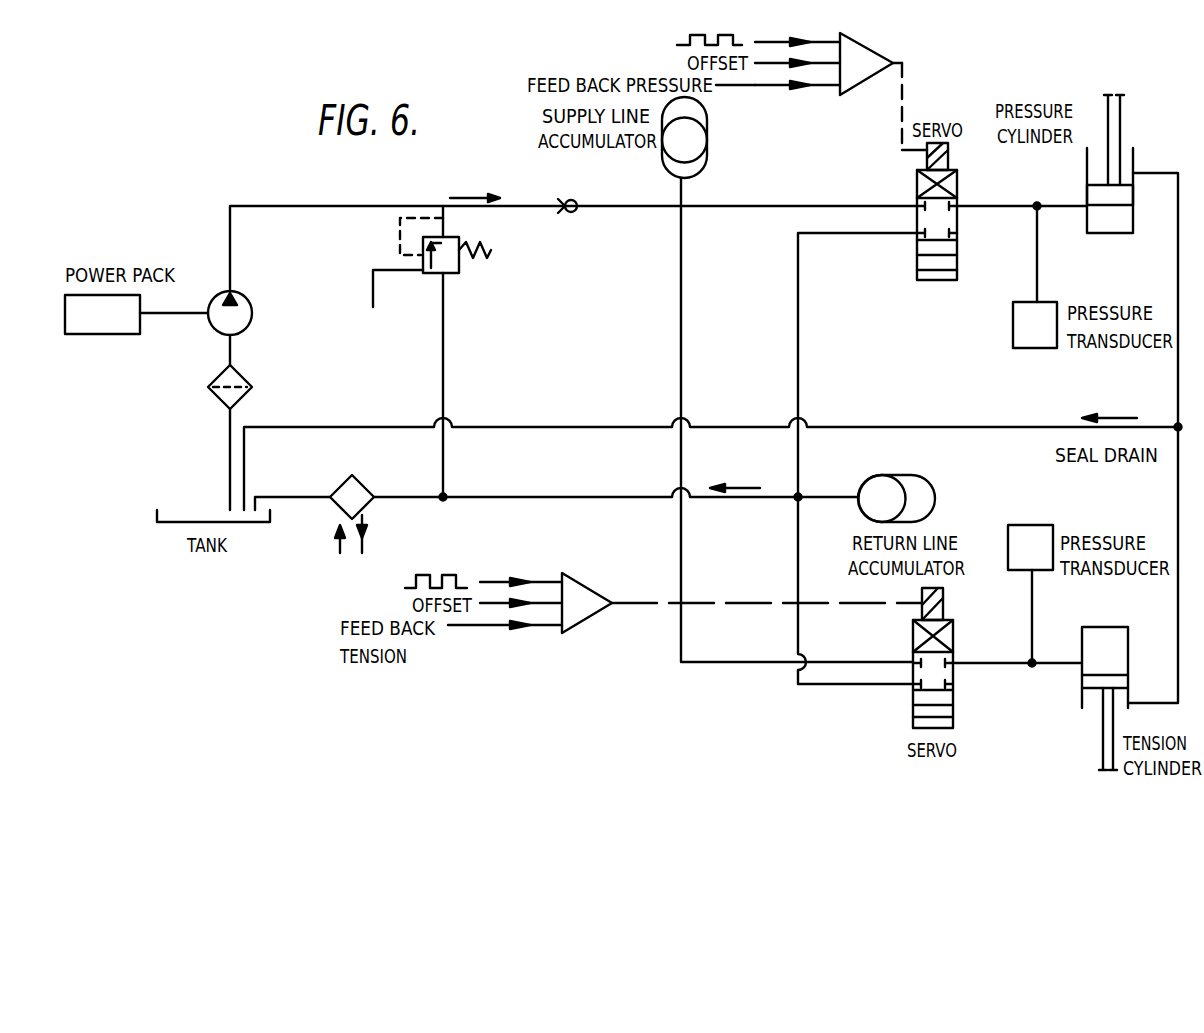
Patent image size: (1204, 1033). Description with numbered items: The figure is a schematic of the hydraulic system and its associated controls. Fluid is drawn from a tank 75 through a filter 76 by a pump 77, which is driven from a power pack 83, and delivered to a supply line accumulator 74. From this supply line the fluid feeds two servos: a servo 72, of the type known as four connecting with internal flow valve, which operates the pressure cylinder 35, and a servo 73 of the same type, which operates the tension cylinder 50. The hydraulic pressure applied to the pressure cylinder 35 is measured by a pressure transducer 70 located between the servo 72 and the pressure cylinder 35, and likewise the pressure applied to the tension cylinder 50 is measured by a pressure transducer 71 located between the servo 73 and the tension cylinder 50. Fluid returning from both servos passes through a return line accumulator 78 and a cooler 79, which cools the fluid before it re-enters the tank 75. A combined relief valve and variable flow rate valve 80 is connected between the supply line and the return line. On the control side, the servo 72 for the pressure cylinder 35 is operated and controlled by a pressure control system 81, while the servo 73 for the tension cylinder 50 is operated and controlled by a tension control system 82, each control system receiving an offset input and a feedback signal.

The pressure cylinder 35 is at (1135, 158).
The tension cylinder 50 is at (1088, 698).
The pressure transducer 70 is at (1025, 335).
The pressure transducer 71 is at (1023, 540).
The servo 72 is at (952, 185).
The servo 73 is at (953, 692).
The supply line accumulator 74 is at (693, 162).
The tank 75 is at (247, 525).
The filter 76 is at (243, 373).
The pump 77 is at (245, 313).
The return line accumulator 78 is at (917, 490).
The cooler 79 is at (363, 502).
The combined relief valve and variable flow rate valve 80 is at (440, 267).
The pressure control system 81 is at (855, 75).
The tension control system 82 is at (568, 617).
The power pack 83 is at (128, 323).